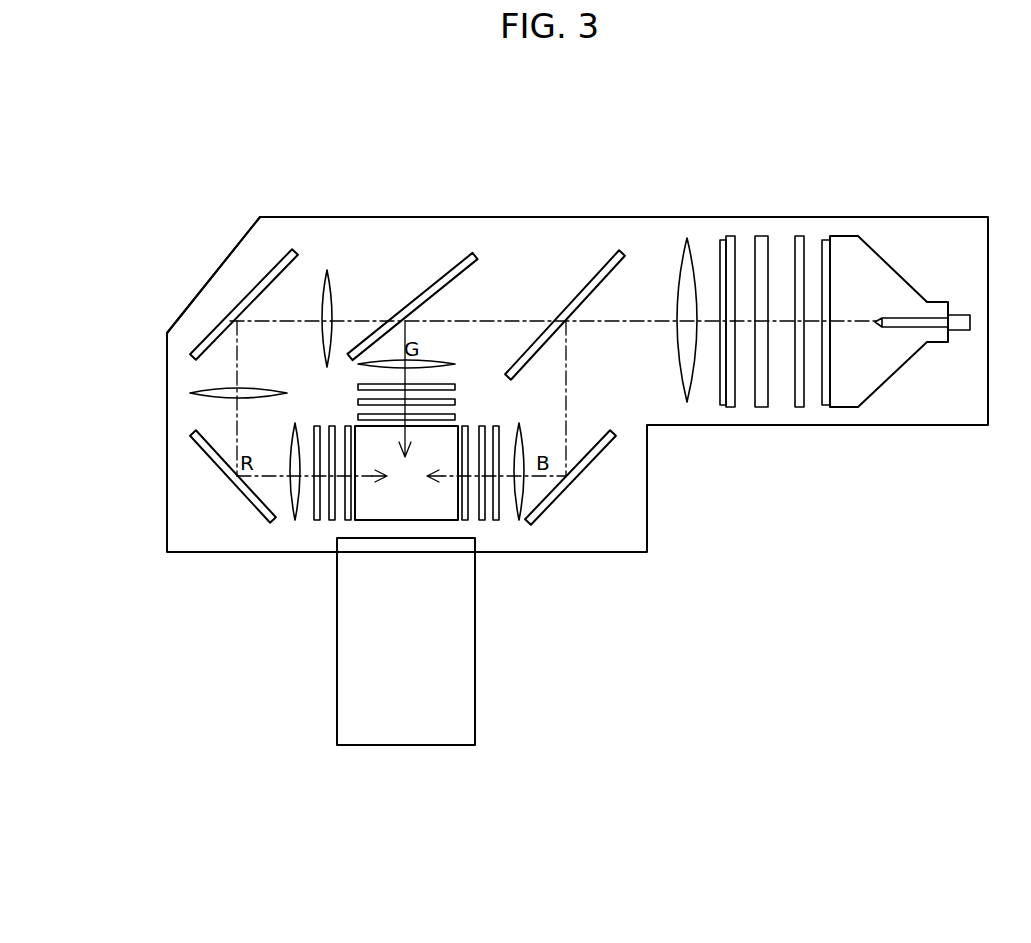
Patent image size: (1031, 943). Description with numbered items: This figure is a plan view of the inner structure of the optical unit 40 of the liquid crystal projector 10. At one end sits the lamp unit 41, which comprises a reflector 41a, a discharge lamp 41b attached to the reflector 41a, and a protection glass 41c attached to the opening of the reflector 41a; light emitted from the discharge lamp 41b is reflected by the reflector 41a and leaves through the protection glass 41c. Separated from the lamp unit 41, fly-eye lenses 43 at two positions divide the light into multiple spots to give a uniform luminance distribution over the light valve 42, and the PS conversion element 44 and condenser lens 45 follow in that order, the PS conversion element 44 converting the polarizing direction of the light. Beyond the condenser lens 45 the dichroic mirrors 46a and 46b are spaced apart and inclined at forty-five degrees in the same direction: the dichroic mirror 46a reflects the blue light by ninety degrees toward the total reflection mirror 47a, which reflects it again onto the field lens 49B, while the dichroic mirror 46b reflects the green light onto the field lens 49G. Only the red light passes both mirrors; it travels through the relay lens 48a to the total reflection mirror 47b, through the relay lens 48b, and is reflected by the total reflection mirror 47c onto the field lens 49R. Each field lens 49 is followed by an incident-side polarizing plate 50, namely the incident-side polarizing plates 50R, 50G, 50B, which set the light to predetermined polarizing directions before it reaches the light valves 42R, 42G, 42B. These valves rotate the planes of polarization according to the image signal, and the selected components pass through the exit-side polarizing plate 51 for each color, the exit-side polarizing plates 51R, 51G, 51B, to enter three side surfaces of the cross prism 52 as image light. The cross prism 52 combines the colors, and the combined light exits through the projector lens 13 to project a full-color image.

The liquid crystal projector 10 is at (168, 164).
The projector lens 13 is at (405, 720).
The optical unit 40 is at (255, 262).
The lamp unit 41 is at (875, 368).
The reflector 41a is at (918, 343).
The discharge lamp 41b is at (940, 320).
The protection glass 41c is at (825, 407).
The light valve 42 is at (462, 473).
The light valve for green 42G is at (456, 402).
The light valve for red 42R is at (332, 522).
The light valve for blue 42B is at (482, 522).
The fly-eye lens 43 is at (760, 407).
The PS conversion element 44 is at (730, 407).
The condenser lens 45 is at (687, 402).
The dichroic mirror 46a is at (623, 254).
The dichroic mirror 46b is at (407, 315).
The total reflection mirror 47a is at (546, 508).
The total reflection mirror 47b is at (228, 317).
The total reflection mirror 47c is at (222, 468).
The relay lens 48a is at (327, 270).
The relay lens 48b is at (195, 392).
The field lens 49 is at (412, 407).
The field lens for green 49G is at (458, 362).
The field lens for red 49R is at (295, 522).
The field lens for blue 49B is at (519, 522).
The incident-side polarizing plate 50 is at (431, 440).
The incident-side polarizing plate for green 50G is at (456, 387).
The incident-side polarizing plate for red 50R is at (317, 522).
The incident-side polarizing plate for blue 50B is at (496, 522).
The exit-side polarizing plate 51 is at (483, 504).
The exit-side polarizing plate for green 51G is at (456, 417).
The exit-side polarizing plate for red 51R is at (348, 522).
The exit-side polarizing plate for blue 51B is at (465, 522).
The cross prism 52 is at (380, 505).